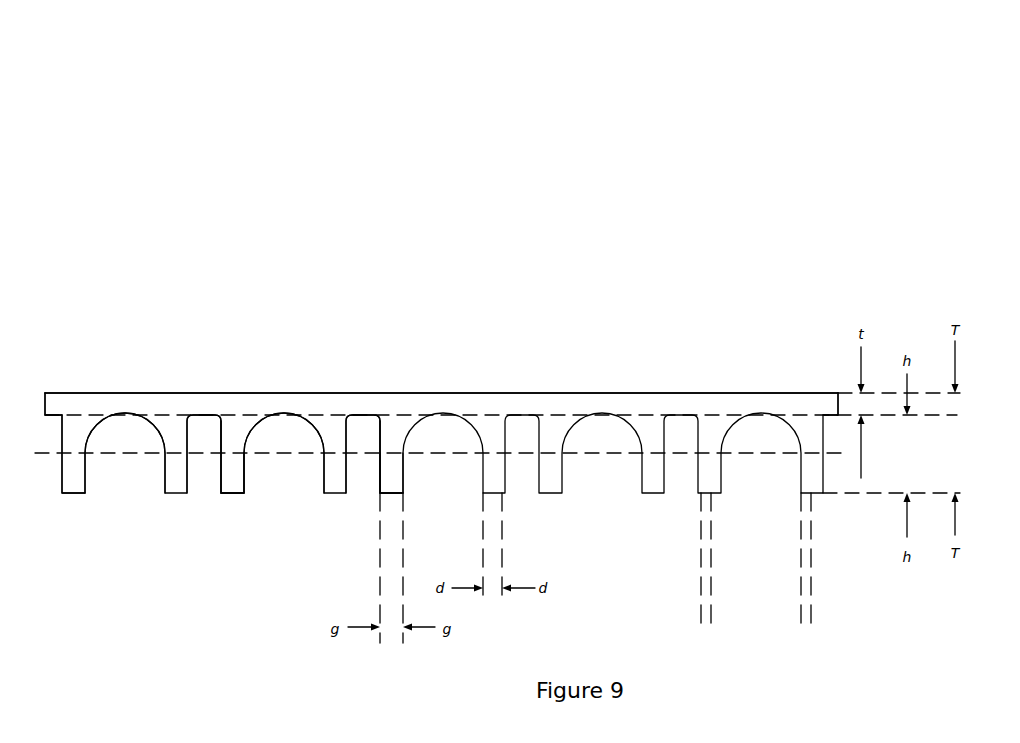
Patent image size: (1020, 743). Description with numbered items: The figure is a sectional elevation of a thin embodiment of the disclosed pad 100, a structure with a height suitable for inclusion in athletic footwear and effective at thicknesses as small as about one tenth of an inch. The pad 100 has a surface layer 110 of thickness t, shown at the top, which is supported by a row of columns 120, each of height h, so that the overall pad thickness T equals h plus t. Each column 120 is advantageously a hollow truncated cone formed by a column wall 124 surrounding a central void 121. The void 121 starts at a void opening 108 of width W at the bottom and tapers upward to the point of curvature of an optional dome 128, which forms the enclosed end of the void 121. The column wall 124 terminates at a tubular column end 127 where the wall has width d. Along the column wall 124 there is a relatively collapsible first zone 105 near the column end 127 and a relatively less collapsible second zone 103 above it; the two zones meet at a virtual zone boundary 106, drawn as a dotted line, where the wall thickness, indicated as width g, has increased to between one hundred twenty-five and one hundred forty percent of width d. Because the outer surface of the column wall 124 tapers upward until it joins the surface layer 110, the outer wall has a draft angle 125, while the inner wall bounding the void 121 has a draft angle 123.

The pad 100 is at (199, 162).
The surface layer 110 is at (558, 403).
The dome 128 is at (127, 415).
The void opening 108 is at (122, 490).
The column 120 is at (232, 435).
The column wall 124 is at (230, 472).
The column end 127 is at (237, 495).
The central void 121 is at (288, 437).
The virtual zone boundary 106 is at (392, 452).
The second zone 103 is at (378, 445).
The first zone 105 is at (378, 482).
The draft angle 125 is at (750, 582).
The draft angle 123 is at (762, 585).